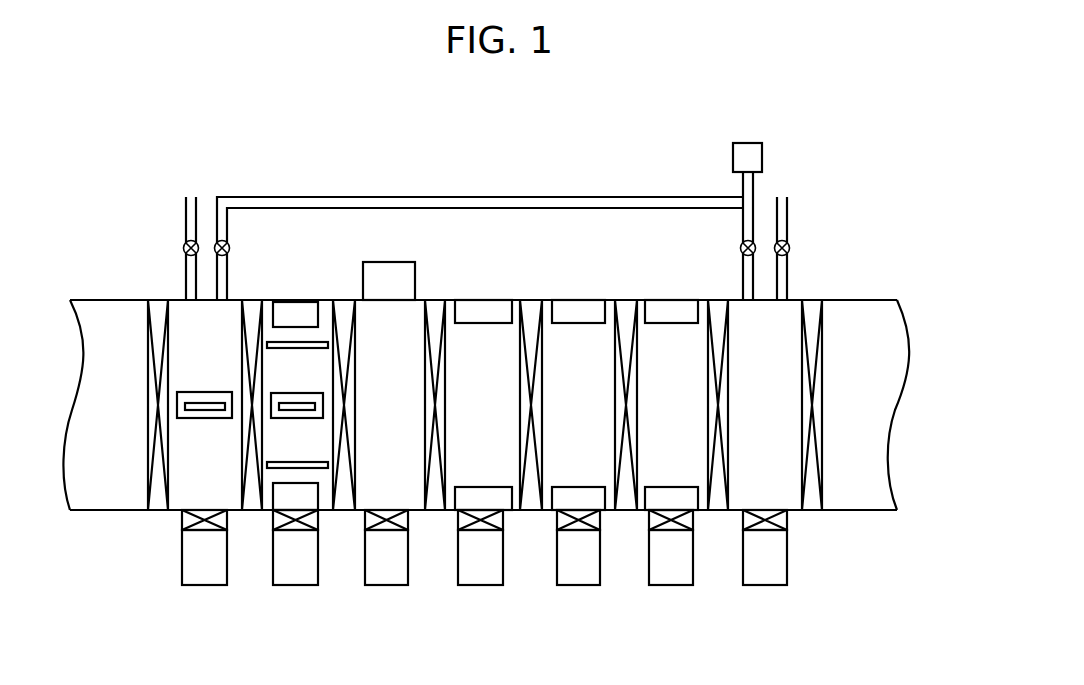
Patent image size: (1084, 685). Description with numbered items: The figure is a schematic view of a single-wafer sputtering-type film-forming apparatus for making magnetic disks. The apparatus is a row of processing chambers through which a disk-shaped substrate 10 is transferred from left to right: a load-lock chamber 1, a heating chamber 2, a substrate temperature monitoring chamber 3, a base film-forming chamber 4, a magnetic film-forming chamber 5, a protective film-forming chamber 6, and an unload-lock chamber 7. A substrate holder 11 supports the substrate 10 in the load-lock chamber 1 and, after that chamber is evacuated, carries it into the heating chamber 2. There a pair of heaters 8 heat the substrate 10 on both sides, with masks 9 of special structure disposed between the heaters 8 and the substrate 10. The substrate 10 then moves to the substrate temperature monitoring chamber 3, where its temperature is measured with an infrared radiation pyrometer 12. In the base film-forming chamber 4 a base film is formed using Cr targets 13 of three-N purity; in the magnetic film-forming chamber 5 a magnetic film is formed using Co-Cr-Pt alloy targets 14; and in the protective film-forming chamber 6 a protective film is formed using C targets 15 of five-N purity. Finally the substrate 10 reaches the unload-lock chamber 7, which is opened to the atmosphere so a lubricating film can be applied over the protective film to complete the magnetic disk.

The load-lock chamber 1 is at (175, 503).
The heating chamber 2 is at (268, 503).
The substrate temperature monitoring chamber 3 is at (358, 503).
The base film-forming chamber 4 is at (450, 503).
The magnetic film-forming chamber 5 is at (545, 503).
The protective film-forming chamber 6 is at (640, 503).
The unload-lock chamber 7 is at (738, 503).
The heaters 8 is at (296, 312).
The masks 9 is at (298, 348).
The substrate 10 is at (200, 400).
The substrate holder 11 is at (203, 420).
The infrared radiation pyrometer 12 is at (403, 283).
The Cr targets 13 is at (480, 317).
The alloy targets 14 is at (573, 317).
The C targets 15 is at (668, 318).